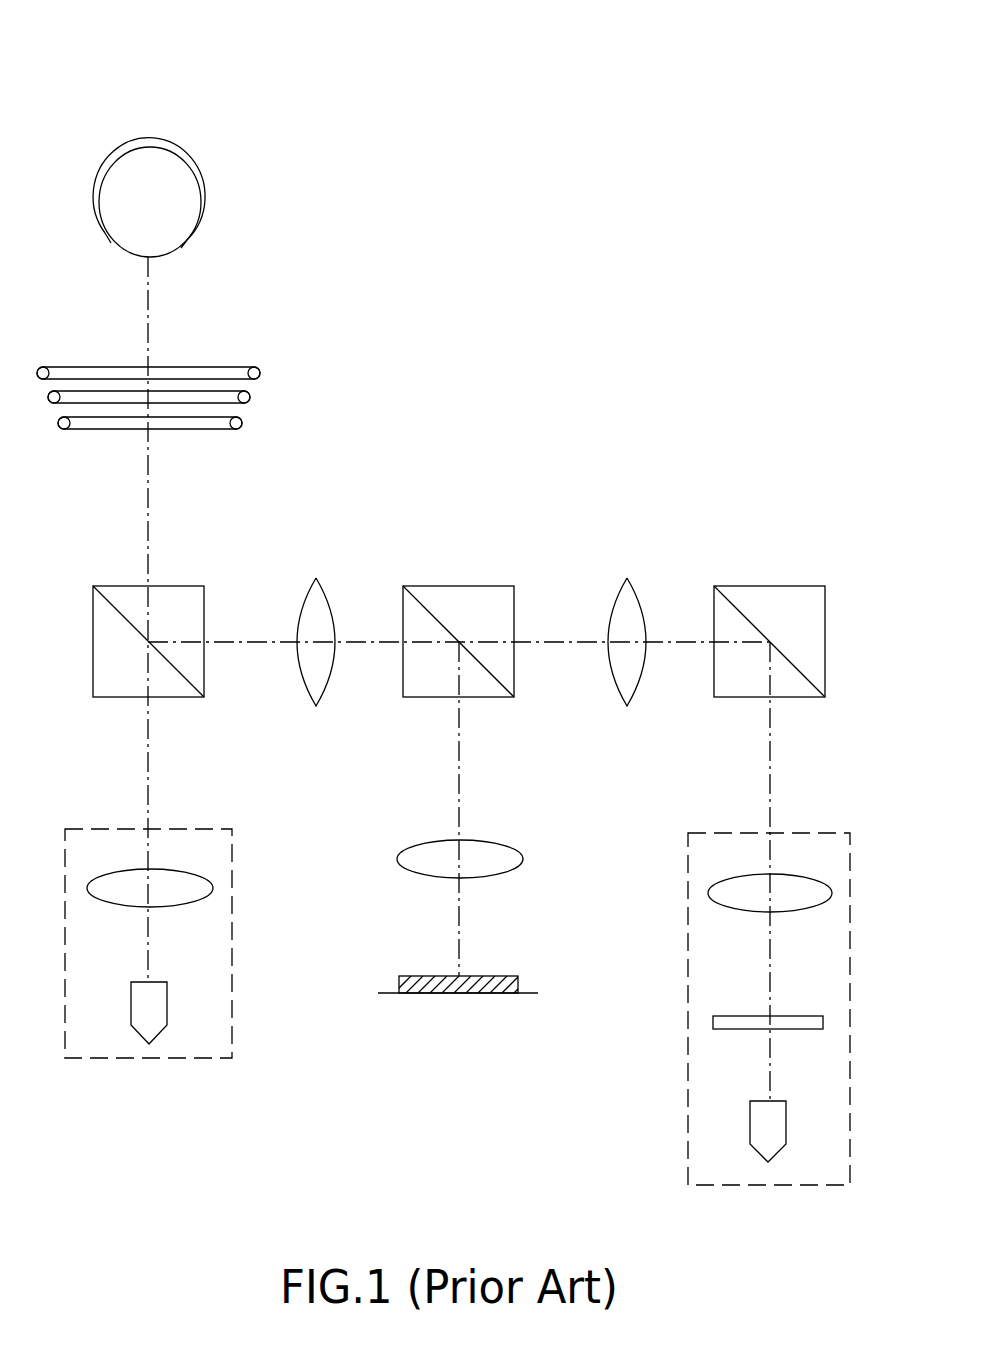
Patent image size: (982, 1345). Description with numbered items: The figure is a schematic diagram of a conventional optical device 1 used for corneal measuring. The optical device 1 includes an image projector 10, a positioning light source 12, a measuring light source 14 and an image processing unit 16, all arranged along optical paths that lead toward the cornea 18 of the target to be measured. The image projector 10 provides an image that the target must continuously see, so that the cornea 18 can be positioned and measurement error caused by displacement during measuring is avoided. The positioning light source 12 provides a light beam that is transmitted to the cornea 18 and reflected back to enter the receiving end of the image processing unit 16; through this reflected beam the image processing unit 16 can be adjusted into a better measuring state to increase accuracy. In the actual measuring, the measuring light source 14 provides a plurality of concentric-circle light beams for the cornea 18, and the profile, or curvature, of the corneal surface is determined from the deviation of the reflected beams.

The optical device 1 is at (163, 52).
The image projector 10 is at (800, 833).
The positioning light source 12 is at (183, 829).
The measuring light source 14 is at (262, 373).
The image processing unit 16 is at (495, 976).
The cornea 18 is at (205, 200).